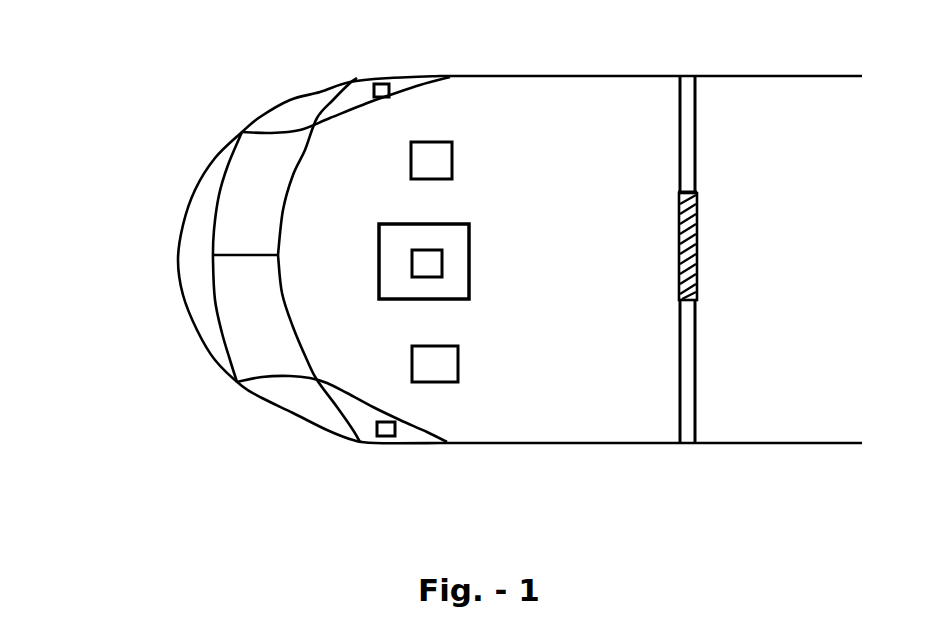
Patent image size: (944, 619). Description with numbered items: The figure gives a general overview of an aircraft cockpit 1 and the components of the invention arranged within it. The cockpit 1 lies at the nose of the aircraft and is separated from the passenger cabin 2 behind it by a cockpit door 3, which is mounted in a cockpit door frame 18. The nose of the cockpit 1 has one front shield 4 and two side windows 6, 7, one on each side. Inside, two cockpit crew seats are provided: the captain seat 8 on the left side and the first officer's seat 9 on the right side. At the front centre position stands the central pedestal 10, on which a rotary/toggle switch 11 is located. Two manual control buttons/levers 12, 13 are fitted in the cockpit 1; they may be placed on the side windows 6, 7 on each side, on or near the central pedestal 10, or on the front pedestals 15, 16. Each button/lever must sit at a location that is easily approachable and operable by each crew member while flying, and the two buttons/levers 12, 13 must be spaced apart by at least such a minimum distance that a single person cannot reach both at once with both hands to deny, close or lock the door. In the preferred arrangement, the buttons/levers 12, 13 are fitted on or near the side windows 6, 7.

The cockpit 1 is at (651, 259).
The passenger cabin 2 is at (835, 253).
The cockpit door 3 is at (699, 266).
The front shield 4 is at (198, 280).
The side window 6 is at (296, 405).
The side window 7 is at (296, 117).
The captain seat 8 is at (462, 365).
The first officer's seat 9 is at (457, 156).
The central pedestal 10 is at (476, 255).
The rotary/toggle switch 11 is at (422, 247).
The manual control button/lever 12 is at (372, 432).
The manual control button/lever 13 is at (370, 90).
The front pedestal 15 is at (245, 203).
The front pedestal 16 is at (252, 333).
The cockpit door frame 18 is at (701, 137).